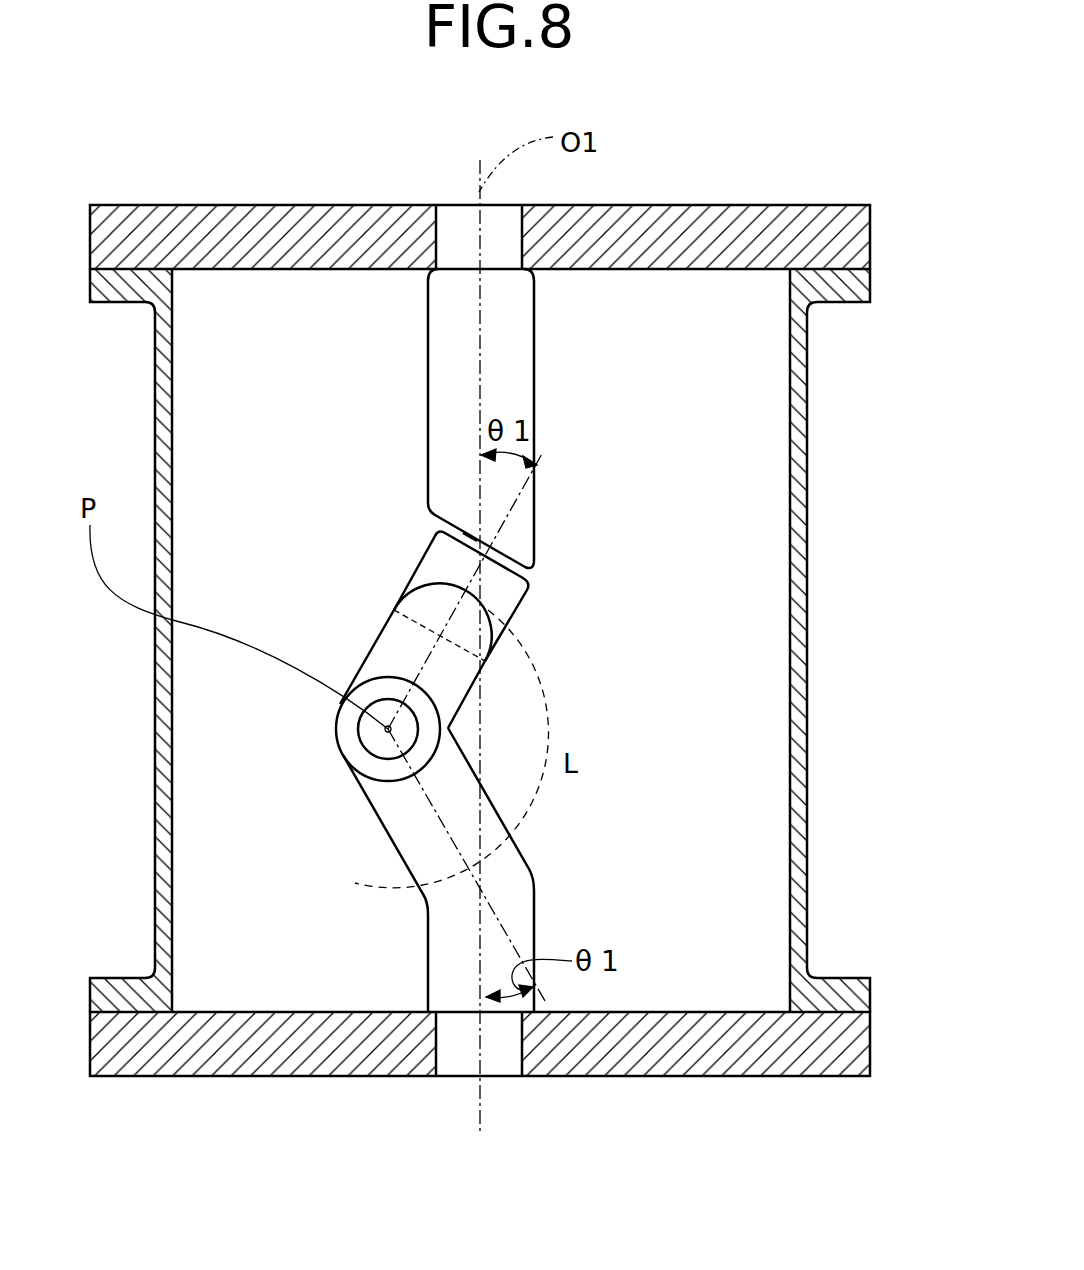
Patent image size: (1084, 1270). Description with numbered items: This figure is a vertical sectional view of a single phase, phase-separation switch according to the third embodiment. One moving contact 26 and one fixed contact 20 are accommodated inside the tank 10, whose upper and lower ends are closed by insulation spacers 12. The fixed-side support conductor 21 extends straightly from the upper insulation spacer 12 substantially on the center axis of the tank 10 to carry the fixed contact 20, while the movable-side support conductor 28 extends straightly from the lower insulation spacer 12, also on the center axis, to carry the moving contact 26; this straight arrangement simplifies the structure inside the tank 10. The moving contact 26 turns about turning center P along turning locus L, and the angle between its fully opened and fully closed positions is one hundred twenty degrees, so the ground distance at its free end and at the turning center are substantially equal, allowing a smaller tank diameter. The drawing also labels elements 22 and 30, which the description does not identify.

The tank 10 is at (155, 353).
The insulation spacer 12 is at (870, 232).
The fixed contact 20 is at (474, 640).
The fixed-side support conductor 21 is at (536, 383).
The joint portion 22 is at (522, 566).
The moving contact 26 is at (473, 690).
The movable-side support conductor 28 is at (537, 900).
The pivot bearing 30 is at (360, 720).